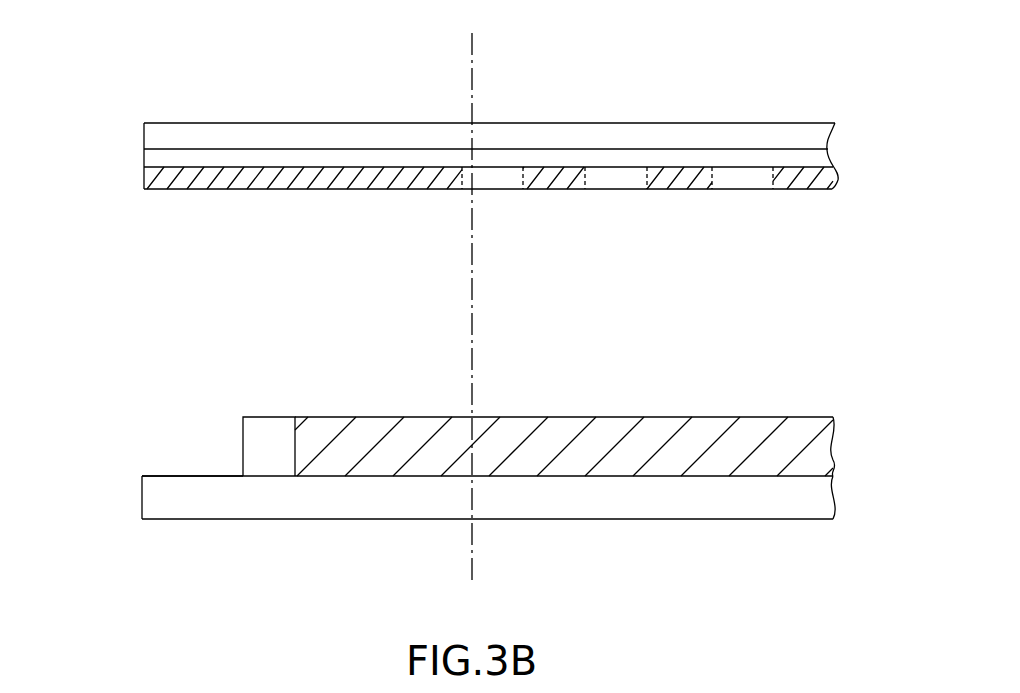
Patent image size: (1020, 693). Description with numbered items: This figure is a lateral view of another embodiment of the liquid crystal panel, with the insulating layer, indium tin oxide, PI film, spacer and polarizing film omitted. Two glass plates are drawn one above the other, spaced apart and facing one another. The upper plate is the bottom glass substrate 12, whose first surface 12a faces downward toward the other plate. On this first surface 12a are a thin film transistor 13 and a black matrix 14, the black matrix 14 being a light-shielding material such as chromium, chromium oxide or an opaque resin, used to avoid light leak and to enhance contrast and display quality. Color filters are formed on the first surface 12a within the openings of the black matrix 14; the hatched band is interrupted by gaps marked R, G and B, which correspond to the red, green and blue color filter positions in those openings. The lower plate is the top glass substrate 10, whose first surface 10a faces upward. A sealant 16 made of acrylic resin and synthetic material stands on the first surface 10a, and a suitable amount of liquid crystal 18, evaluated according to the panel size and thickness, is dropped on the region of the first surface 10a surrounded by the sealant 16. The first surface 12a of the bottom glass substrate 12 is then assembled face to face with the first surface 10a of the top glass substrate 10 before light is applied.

The top glass substrate 10 is at (215, 510).
The first surface of the top glass substrate 10a is at (182, 476).
The bottom glass substrate 12 is at (152, 135).
The first surface of the bottom glass substrate 12a is at (191, 149).
The thin film transistor 13 is at (152, 157).
The black matrix 14 is at (293, 178).
The sealant 16 is at (270, 451).
The liquid crystal 18 is at (828, 450).
The red sub-pixel region R is at (493, 175).
The green sub-pixel region G is at (632, 177).
The blue sub-pixel region B is at (740, 177).